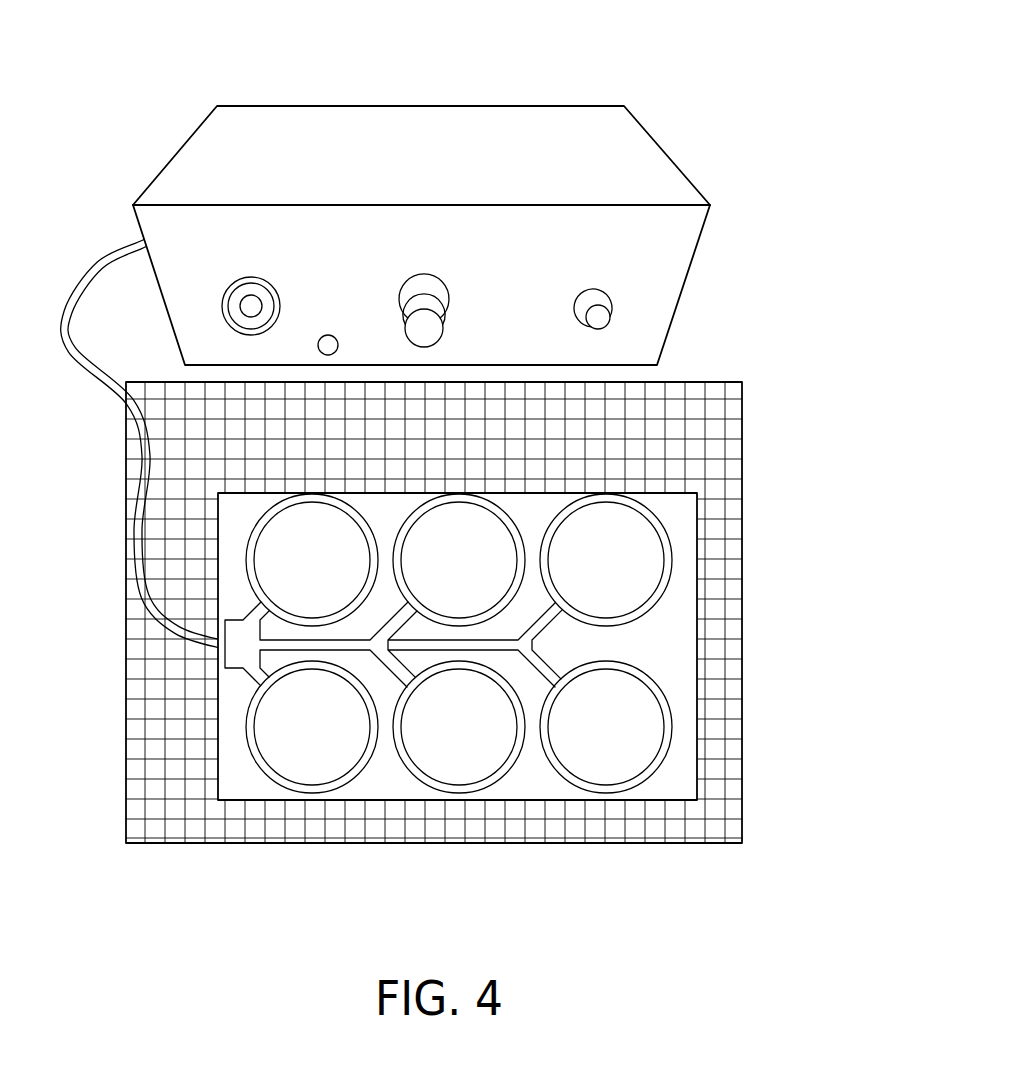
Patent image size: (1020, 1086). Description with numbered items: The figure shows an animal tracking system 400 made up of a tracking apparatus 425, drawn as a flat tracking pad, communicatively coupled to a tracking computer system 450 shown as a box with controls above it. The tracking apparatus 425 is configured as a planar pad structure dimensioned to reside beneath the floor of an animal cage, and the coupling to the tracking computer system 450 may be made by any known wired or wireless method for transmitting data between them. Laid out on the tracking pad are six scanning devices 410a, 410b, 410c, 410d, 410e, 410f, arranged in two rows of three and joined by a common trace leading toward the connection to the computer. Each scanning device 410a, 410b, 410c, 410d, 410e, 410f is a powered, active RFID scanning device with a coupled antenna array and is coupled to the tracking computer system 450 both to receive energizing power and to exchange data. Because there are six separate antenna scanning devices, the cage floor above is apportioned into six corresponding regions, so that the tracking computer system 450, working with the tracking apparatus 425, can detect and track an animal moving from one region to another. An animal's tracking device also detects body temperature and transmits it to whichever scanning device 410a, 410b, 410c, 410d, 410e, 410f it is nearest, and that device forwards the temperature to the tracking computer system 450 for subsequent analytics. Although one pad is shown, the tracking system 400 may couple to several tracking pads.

The tracking system 400 is at (461, 463).
The tracking computer system 450 is at (420, 105).
The tracking apparatus 425 is at (580, 480).
The scanning device 410a is at (282, 783).
The scanning device 410b is at (432, 783).
The scanning device 410c is at (648, 770).
The scanning device 410d is at (248, 548).
The scanning device 410e is at (453, 496).
The scanning device 410f is at (670, 567).